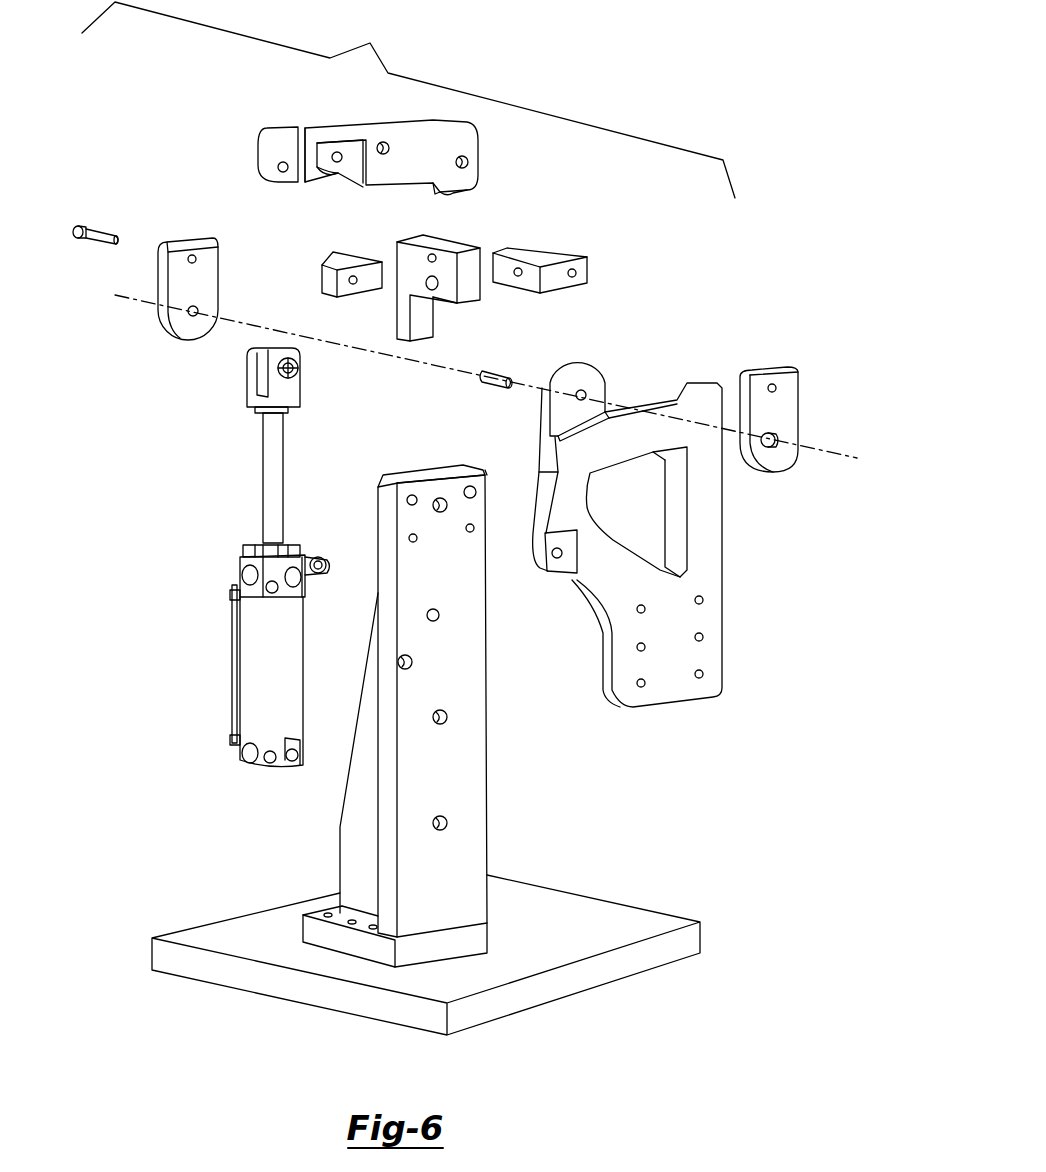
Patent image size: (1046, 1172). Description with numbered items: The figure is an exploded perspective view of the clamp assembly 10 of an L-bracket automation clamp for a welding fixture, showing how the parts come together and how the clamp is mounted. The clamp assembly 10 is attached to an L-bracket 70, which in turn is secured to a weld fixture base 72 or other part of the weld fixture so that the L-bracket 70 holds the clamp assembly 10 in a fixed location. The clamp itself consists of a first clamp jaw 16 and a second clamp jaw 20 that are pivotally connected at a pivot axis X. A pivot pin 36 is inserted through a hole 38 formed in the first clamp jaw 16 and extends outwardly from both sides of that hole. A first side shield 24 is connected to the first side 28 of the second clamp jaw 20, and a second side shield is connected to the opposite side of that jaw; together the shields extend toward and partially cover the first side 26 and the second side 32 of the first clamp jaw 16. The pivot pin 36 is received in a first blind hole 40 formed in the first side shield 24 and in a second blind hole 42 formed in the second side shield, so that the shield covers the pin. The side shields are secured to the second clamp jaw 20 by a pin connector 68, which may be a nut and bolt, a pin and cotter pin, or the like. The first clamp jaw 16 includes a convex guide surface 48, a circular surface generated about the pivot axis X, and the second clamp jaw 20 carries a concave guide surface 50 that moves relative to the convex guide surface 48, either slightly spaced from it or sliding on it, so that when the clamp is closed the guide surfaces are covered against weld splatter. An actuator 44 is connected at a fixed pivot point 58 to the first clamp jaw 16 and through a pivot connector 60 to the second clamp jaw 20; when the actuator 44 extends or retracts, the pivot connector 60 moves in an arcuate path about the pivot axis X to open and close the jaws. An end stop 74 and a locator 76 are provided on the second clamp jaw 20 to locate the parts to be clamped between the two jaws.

The clamp assembly 10 is at (408, 100).
The first clamp jaw 16 is at (617, 508).
The second clamp jaw 20 is at (380, 150).
The first side shield 24 is at (507, 339).
The first side of the first clamp jaw 26 is at (603, 375).
The first side of the second clamp jaw 28 is at (350, 148).
The second side of the first clamp jaw 32 is at (542, 428).
The pivot pin 36 is at (490, 372).
The hole 38 is at (587, 394).
The first blind hole 40 is at (193, 316).
The second blind hole 42 is at (777, 445).
The actuator 44 is at (263, 665).
The convex guide surface 48 is at (567, 362).
The concave guide surface 50 is at (342, 182).
The fixed pivot point 58 is at (557, 558).
The pivot connector 60 is at (278, 167).
The pin connector 68 is at (102, 232).
The L-bracket 70 is at (463, 673).
The weld fixture base 72 is at (542, 903).
The end stop 74 is at (400, 313).
The locator 76 is at (330, 277).
The pivot axis X is at (372, 352).